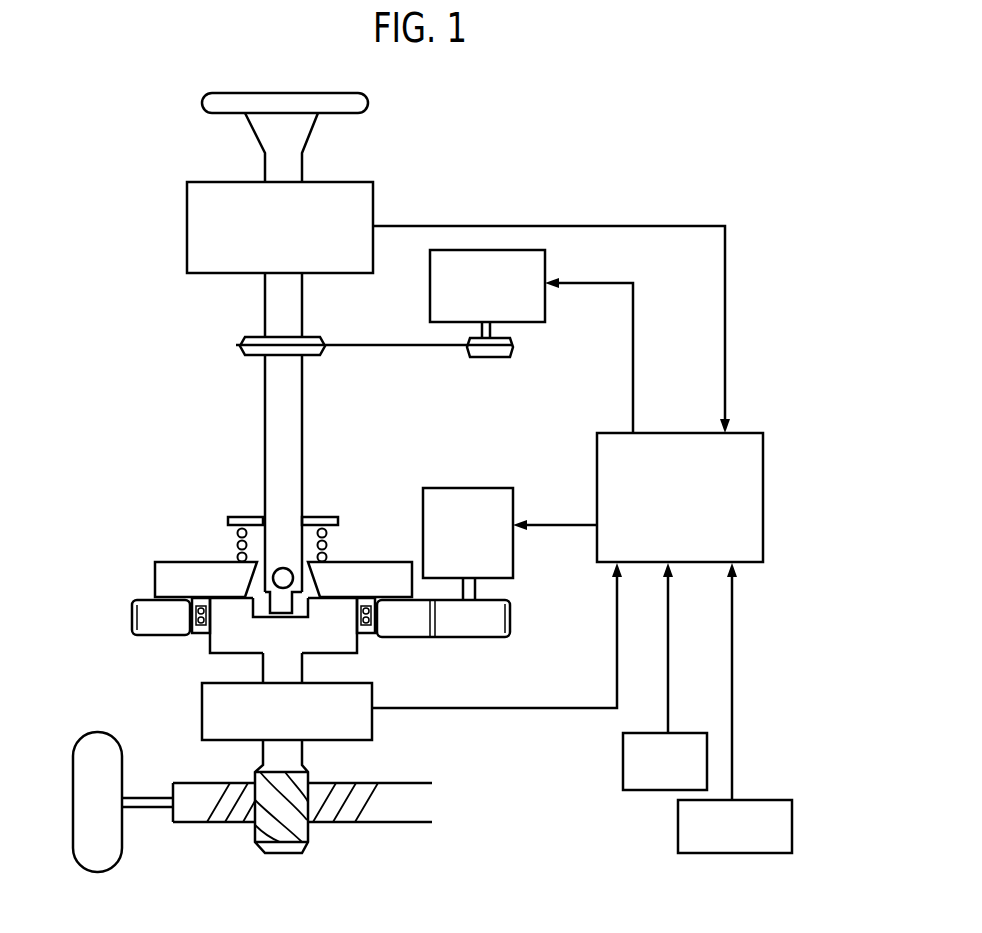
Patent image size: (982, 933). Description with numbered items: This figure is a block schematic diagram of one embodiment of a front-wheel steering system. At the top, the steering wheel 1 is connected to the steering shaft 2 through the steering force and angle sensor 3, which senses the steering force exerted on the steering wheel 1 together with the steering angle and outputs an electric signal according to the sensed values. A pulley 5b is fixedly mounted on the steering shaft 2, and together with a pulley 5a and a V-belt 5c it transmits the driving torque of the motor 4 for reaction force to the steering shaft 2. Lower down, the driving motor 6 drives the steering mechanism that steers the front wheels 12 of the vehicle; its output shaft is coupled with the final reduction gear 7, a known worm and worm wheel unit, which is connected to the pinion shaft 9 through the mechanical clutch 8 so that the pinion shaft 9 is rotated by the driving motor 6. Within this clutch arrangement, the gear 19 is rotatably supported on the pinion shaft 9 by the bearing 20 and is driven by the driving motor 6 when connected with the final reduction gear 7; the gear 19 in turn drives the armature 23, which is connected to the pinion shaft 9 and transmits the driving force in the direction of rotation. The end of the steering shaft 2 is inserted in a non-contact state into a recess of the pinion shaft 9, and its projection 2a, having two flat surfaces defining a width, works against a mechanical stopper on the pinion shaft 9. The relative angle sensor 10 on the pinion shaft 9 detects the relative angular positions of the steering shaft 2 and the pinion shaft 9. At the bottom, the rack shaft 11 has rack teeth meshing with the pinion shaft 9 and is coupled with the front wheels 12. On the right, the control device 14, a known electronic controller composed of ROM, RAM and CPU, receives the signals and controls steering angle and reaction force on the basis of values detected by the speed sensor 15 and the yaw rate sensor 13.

The steering wheel 1 is at (368, 104).
The steering shaft 2 is at (302, 477).
The projection 2a is at (270, 603).
The steering force and angle sensor 3 is at (373, 196).
The motor for reaction force 4 is at (545, 318).
The pulley 5a is at (496, 358).
The pulley 5b is at (312, 356).
The V-belt 5c is at (422, 346).
The driving motor 6 is at (493, 488).
The final reduction gear 7 is at (510, 620).
The mechanical clutch 8 is at (245, 510).
The pinion shaft 9 is at (302, 673).
The relative angle sensor 10 is at (372, 738).
The rack shaft 11 is at (422, 822).
The front wheels 12 is at (120, 838).
The yaw rate sensor 13 is at (678, 816).
The control device 14 is at (757, 431).
The speed sensor 15 is at (623, 751).
The gear 19 is at (143, 607).
The bearing 20 is at (200, 630).
The armature 23 is at (172, 560).